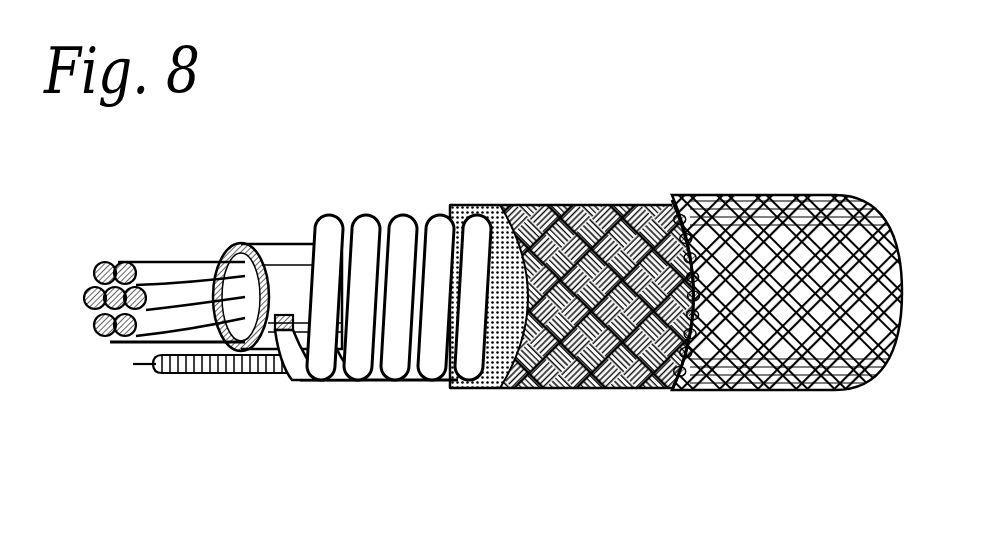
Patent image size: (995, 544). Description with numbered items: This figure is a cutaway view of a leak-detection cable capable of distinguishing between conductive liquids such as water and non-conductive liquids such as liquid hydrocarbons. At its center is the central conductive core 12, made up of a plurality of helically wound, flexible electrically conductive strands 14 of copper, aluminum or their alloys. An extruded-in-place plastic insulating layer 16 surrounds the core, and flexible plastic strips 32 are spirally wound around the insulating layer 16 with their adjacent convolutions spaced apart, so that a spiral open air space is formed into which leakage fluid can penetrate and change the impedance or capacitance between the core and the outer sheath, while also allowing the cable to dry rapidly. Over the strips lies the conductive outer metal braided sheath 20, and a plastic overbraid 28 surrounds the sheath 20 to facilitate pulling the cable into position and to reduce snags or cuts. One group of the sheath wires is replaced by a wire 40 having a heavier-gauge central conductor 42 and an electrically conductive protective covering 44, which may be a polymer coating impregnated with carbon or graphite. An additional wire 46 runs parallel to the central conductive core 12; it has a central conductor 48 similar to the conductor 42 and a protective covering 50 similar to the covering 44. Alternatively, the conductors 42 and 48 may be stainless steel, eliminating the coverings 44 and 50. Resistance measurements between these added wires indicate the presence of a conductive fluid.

The central conductive core 12 is at (105, 348).
The electrically conductive wires or strands 14 is at (200, 277).
The plastic insulating layer 16 is at (278, 272).
The conductive outer metal braided sheath 20 is at (578, 198).
The plastic overbraid 28 is at (727, 382).
The elongated strips 32 is at (417, 220).
The wire 40 is at (615, 389).
The central conductor 42 is at (553, 388).
The protective covering 44 is at (543, 217).
The additional wire 46 is at (183, 388).
The central conductor 48 is at (148, 364).
The protective covering 50 is at (268, 372).